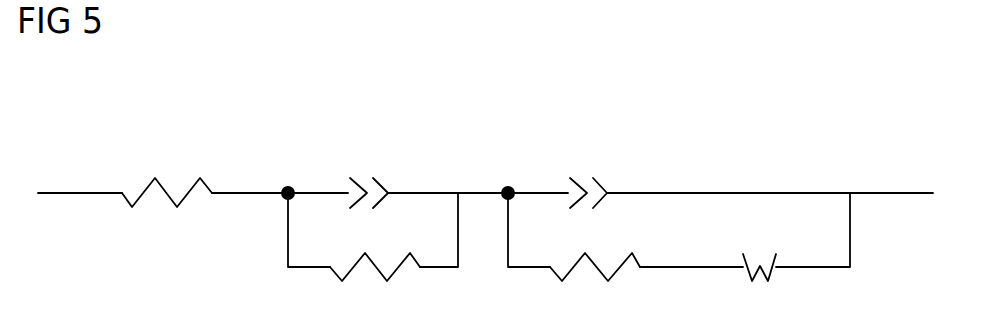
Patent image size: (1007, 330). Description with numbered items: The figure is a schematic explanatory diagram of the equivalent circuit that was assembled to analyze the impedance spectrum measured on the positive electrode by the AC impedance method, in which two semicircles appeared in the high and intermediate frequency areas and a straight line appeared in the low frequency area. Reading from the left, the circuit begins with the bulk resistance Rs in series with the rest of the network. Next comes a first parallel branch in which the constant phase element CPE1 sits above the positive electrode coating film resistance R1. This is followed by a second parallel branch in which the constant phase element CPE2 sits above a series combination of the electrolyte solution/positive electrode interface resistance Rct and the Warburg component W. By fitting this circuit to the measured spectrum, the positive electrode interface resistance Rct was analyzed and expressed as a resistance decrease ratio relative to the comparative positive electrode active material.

The bulk resistance Rs is at (167, 175).
The constant phase element CPE1 is at (383, 176).
The positive electrode coating film resistance R1 is at (375, 252).
The constant phase element CPE2 is at (598, 176).
The electrolyte solution/positive electrode interface resistance Rct is at (595, 252).
The Warburg component W is at (762, 255).